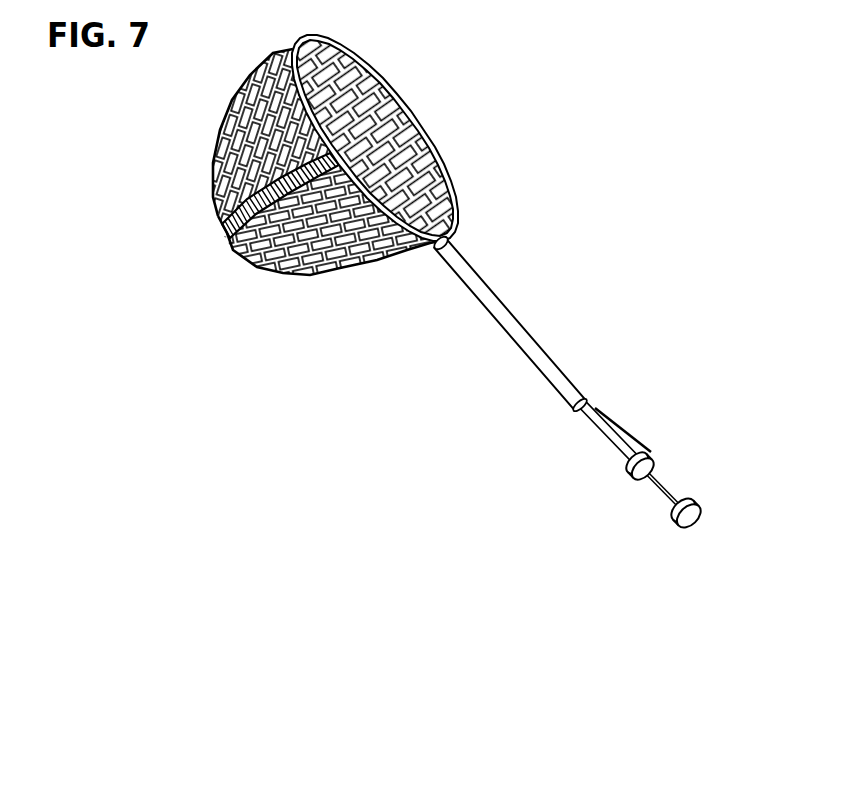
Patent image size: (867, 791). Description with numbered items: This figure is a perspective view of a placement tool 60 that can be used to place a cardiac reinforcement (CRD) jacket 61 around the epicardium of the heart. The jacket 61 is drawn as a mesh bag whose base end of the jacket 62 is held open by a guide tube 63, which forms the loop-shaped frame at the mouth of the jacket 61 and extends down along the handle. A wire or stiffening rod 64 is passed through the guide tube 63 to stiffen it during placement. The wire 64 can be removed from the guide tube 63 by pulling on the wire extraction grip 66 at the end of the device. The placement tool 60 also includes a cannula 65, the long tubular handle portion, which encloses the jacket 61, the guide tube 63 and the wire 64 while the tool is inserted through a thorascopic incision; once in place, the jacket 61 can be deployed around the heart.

The placement tool 60 is at (518, 296).
The CRD jacket 61 is at (226, 124).
The base end of the jacket 62 is at (269, 53).
The guide tube 63 is at (457, 209).
The wire or stiffening rod 64 is at (640, 438).
The cannula 65 is at (473, 264).
The wire extraction grip 66 is at (701, 513).